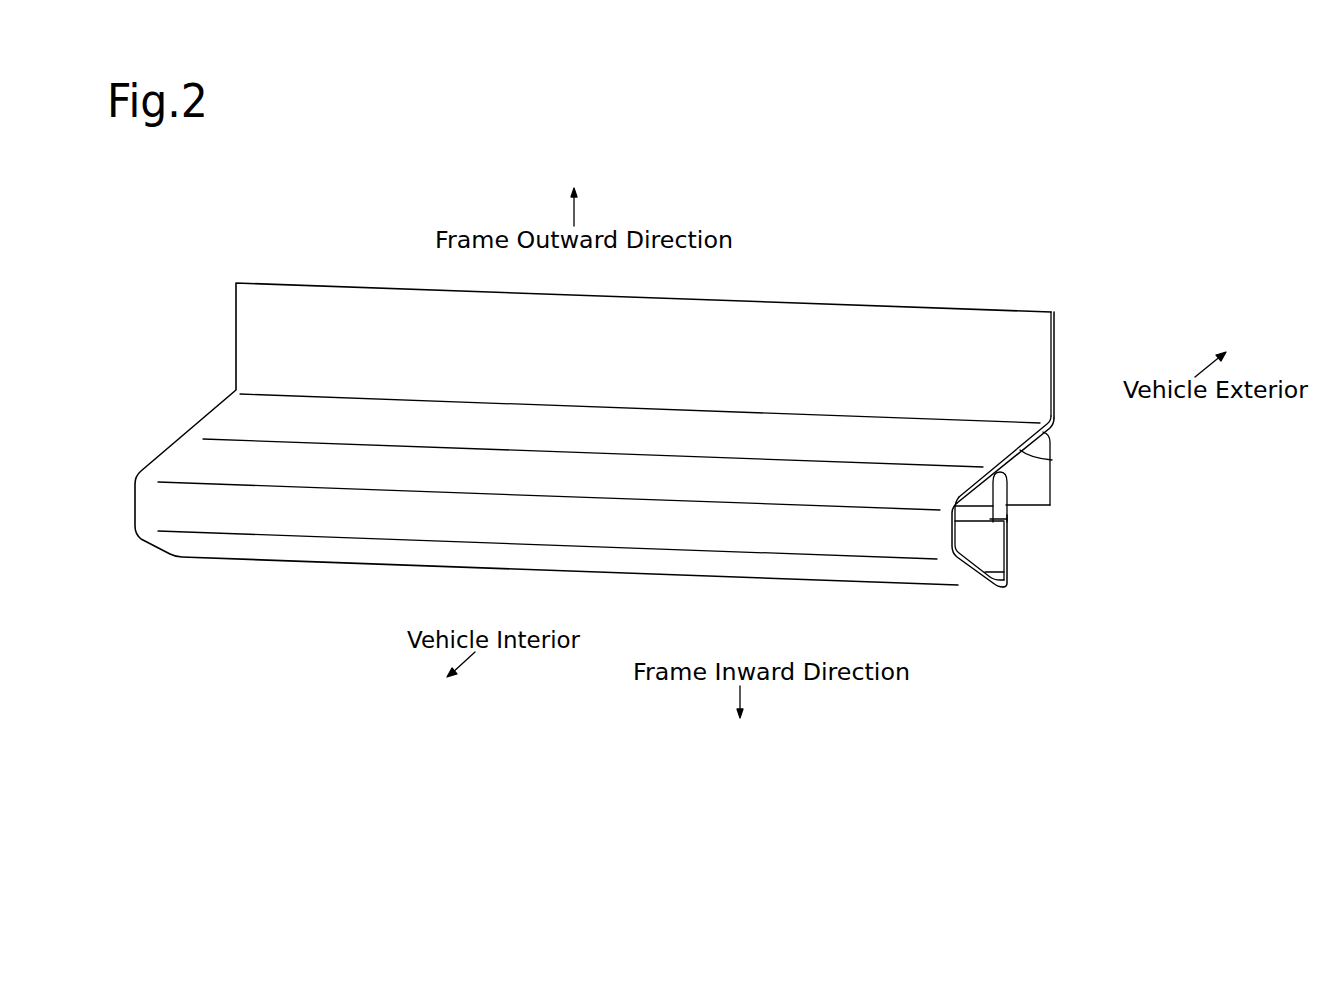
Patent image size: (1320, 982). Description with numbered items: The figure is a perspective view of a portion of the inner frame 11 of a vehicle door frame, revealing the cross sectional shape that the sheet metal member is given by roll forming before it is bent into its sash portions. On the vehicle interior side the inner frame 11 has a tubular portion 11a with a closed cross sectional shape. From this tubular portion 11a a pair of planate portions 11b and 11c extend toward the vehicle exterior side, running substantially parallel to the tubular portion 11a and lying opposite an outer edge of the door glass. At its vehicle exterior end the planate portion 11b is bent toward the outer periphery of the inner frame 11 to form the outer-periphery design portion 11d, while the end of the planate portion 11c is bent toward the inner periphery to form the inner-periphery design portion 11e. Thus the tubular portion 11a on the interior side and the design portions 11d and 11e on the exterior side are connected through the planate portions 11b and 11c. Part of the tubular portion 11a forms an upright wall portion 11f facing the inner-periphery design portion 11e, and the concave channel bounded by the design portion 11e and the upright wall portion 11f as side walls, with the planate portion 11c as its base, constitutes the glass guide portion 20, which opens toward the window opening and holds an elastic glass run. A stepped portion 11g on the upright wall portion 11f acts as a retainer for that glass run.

The inner frame 11 is at (775, 261).
The tubular portion 11a is at (963, 565).
The planate portion 11b is at (1003, 455).
The planate portion 11c is at (1053, 460).
The outer-periphery design portion 11d is at (1055, 373).
The inner-periphery design portion 11e is at (1055, 474).
The upright wall portion 11f is at (1010, 547).
The stepped portion 11g is at (990, 467).
The glass guide portion 20 is at (1027, 517).